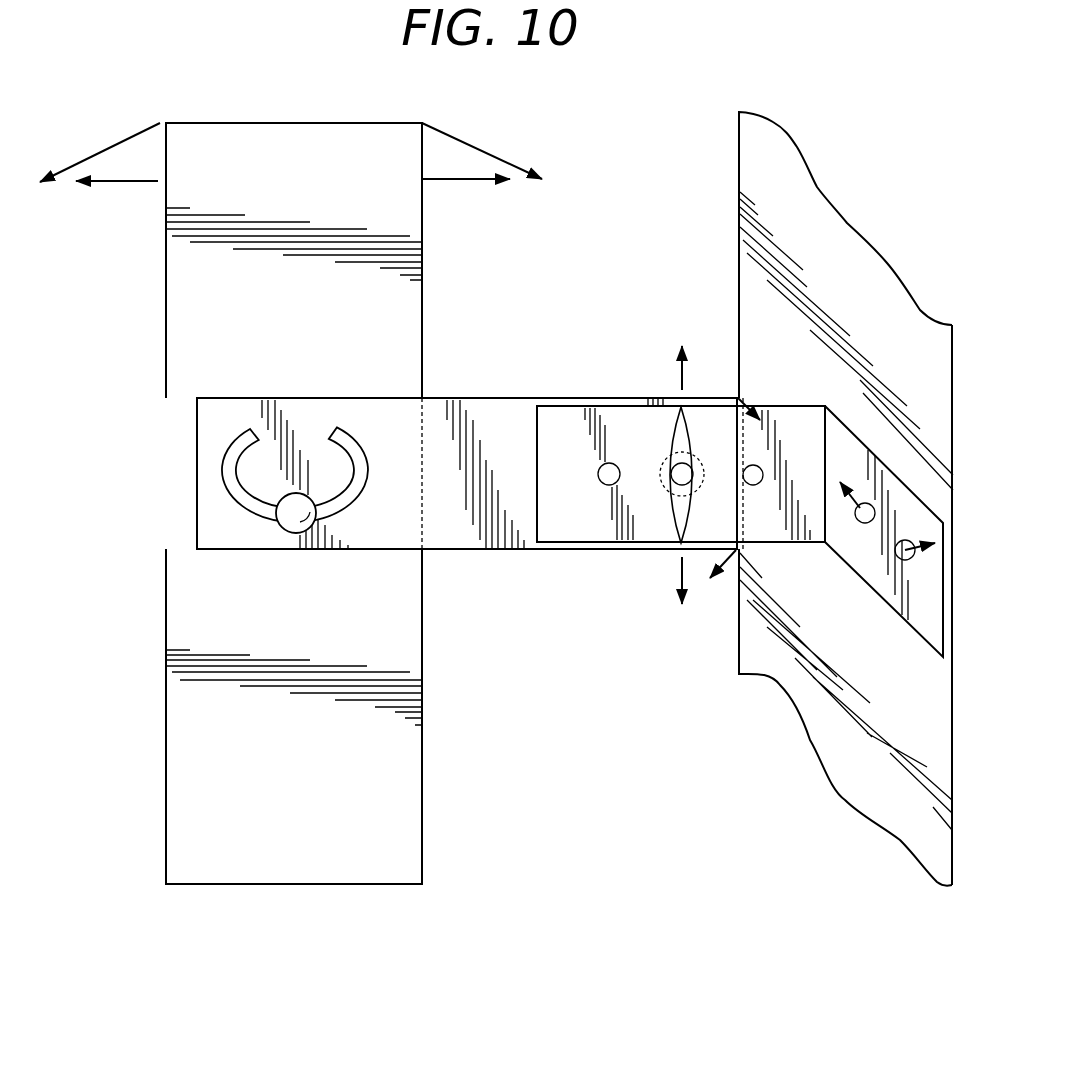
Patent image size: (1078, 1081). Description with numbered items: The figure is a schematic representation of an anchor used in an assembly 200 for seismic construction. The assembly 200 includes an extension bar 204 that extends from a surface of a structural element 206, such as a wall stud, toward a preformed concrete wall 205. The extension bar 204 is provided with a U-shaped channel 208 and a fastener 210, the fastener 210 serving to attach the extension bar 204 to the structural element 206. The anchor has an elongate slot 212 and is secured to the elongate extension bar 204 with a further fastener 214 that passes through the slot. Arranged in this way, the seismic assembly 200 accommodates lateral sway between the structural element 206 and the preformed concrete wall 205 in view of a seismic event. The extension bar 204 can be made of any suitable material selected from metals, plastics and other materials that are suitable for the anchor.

The assembly 200 is at (656, 180).
The extension bar 204 is at (507, 418).
The preformed concrete wall 205 is at (757, 635).
The structural element 206 is at (398, 312).
The U-shaped channel 208 is at (252, 440).
The fastener 210 is at (296, 520).
The elongate slot 212 is at (680, 437).
The fastener 214 is at (678, 475).